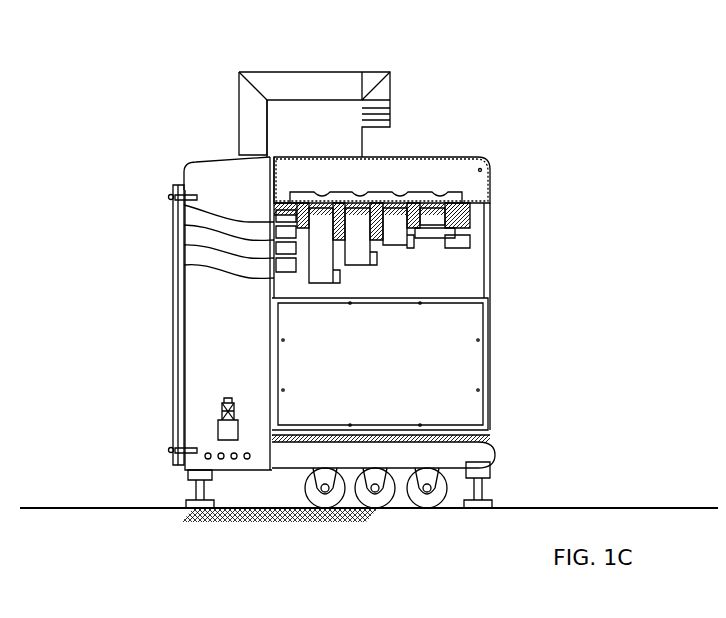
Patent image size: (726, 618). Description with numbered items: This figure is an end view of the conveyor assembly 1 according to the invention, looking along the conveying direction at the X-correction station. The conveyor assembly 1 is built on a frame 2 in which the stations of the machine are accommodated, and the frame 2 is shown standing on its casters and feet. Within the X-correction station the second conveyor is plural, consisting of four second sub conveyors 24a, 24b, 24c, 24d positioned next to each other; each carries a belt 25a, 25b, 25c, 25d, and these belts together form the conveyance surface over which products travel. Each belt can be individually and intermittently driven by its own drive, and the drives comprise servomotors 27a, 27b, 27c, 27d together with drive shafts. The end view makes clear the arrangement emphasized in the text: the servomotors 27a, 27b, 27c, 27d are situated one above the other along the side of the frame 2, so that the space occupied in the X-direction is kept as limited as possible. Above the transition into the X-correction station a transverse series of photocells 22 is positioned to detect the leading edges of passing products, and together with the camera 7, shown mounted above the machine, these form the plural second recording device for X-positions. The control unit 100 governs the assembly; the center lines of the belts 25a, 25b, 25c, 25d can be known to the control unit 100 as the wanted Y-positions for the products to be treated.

The conveyor assembly 1 is at (536, 96).
The frame 2 is at (177, 428).
The camera 7 is at (373, 112).
The photocells 22 is at (307, 168).
The second sub conveyor 24a is at (324, 292).
The second sub conveyor 24b is at (359, 272).
The second sub conveyor 24c is at (398, 256).
The second sub conveyor 24d is at (434, 250).
The belt 25a is at (320, 222).
The belt 25b is at (357, 223).
The belt 25c is at (397, 220).
The belt 25d is at (433, 218).
The servomotor 27a is at (172, 198).
The servomotor 27b is at (184, 225).
The servomotor 27c is at (184, 245).
The servomotor 27d is at (184, 265).
The control unit 100 is at (227, 330).